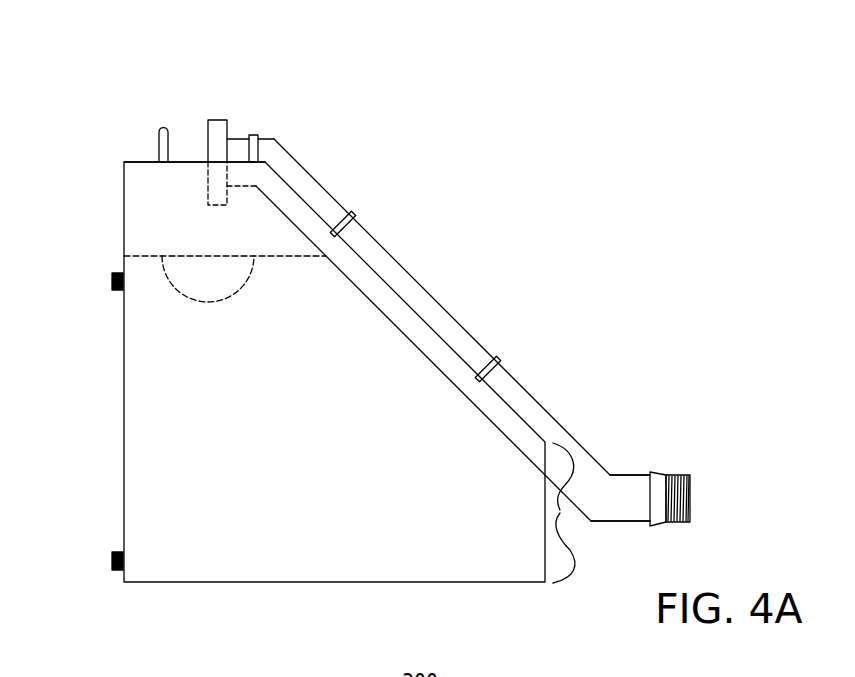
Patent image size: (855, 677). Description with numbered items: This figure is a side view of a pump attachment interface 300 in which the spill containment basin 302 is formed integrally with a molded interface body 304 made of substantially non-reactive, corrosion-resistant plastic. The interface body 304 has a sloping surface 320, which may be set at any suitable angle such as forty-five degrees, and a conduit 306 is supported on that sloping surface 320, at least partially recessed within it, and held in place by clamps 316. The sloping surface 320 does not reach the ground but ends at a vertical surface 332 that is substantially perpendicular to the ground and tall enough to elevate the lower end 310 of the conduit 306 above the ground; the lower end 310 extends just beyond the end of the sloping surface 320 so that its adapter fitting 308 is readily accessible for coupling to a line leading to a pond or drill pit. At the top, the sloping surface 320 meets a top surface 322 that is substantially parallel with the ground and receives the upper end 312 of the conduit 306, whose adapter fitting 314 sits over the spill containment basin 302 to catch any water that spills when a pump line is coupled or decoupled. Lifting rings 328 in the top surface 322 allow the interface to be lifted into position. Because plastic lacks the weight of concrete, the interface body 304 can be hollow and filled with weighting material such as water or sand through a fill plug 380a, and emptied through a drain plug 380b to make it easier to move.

The pump attachment interface 300 is at (503, 125).
The spill containment basin 302 is at (177, 290).
The interface body 304 is at (124, 470).
The conduit 306 is at (393, 258).
The adapter fitting 308 is at (672, 475).
The lower end 310 is at (625, 445).
The upper end 312 is at (263, 110).
The adapter fitting 314 is at (217, 118).
The clamps 316 is at (355, 217).
The sloping surface 320 is at (453, 330).
The top surface 322 is at (140, 160).
The lifting rings 328 is at (158, 132).
The vertical surface 332 is at (560, 510).
The fill plug 380a is at (118, 273).
The drain plug 380b is at (118, 552).